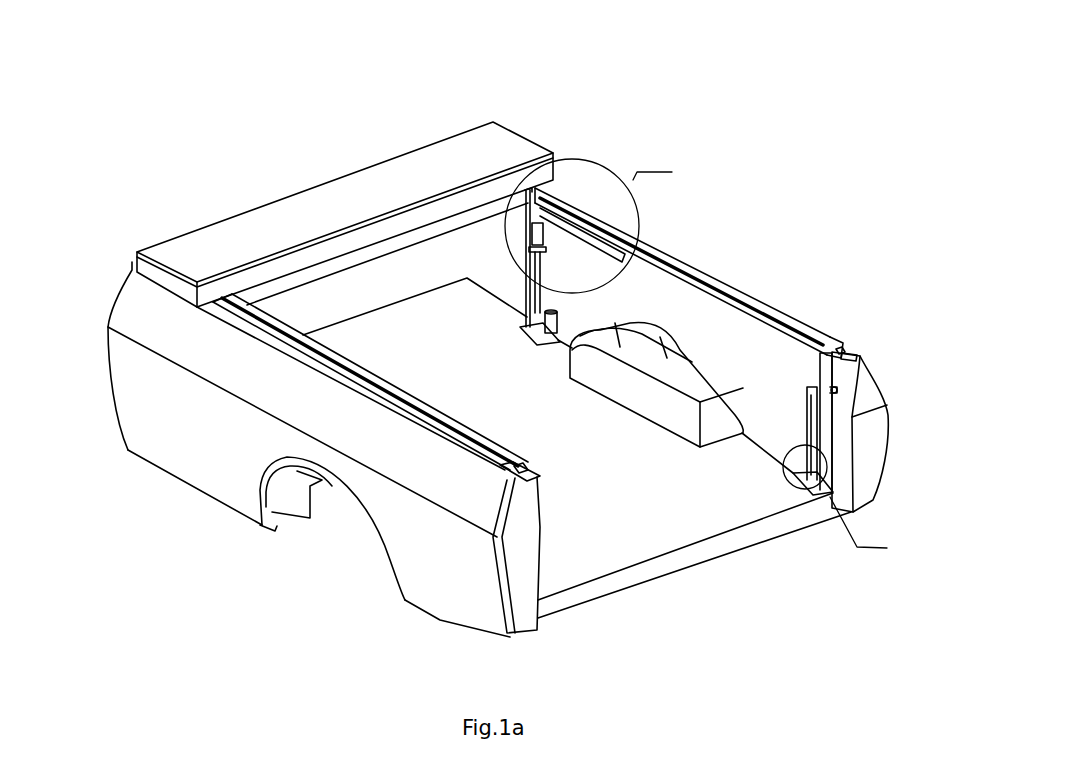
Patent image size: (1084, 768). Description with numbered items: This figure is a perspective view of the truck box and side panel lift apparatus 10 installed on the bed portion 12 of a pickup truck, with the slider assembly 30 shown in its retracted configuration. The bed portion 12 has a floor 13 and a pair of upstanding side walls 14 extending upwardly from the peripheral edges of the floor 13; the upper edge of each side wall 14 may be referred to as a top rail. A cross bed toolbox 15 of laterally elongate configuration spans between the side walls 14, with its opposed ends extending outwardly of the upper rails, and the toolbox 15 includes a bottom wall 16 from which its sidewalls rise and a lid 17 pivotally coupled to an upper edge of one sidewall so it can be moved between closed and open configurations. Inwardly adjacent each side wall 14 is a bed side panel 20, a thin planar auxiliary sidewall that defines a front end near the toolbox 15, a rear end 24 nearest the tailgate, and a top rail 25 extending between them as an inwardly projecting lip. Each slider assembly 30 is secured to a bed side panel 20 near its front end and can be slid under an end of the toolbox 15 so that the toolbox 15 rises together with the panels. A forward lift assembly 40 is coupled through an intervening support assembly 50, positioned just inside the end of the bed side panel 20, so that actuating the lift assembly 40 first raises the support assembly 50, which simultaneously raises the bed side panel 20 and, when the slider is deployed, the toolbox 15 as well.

The truck box and side panel lift apparatus 10 is at (709, 86).
The bed portion 12 is at (118, 478).
The floor 13 is at (665, 533).
The side wall 14 is at (740, 356).
The toolbox 15 is at (345, 196).
The bottom wall 16 is at (385, 312).
The lid 17 is at (389, 177).
The bed side panel 20 is at (717, 318).
The rear end 24 is at (827, 375).
The top rail 25 is at (331, 362).
The slider assembly 30 is at (582, 226).
The forward lift assembly 40 is at (531, 325).
The support assembly 50 is at (500, 294).